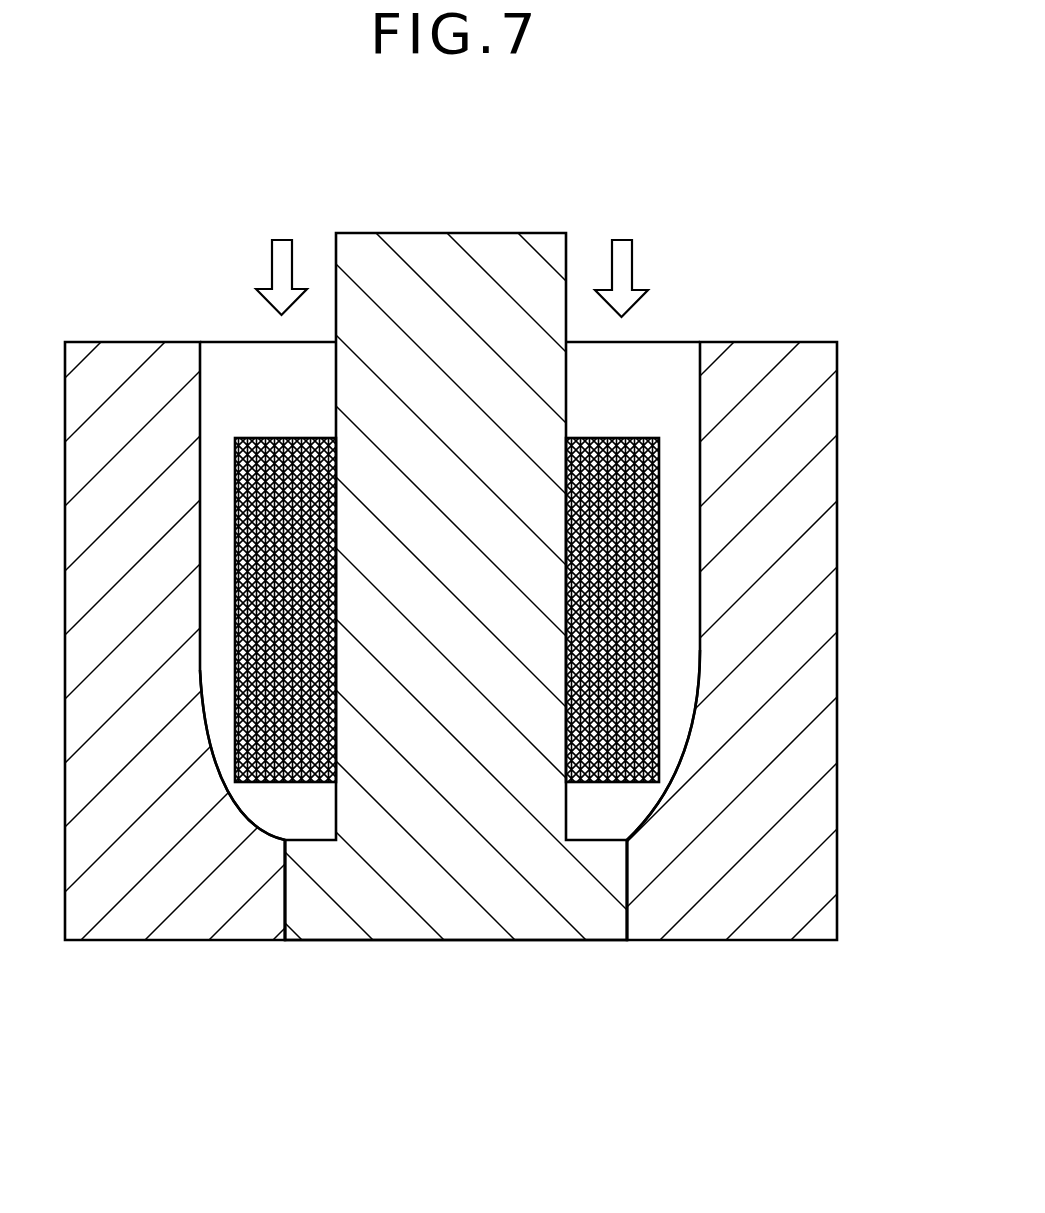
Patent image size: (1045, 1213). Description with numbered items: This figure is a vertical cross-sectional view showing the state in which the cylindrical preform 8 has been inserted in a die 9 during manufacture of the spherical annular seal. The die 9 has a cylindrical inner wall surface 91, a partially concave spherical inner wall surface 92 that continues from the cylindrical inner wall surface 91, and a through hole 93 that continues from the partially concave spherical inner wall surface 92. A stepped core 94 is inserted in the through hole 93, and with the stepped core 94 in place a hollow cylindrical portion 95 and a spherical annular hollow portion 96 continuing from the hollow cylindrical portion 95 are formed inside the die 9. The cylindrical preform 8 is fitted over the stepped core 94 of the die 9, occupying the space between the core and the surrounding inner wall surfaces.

The cylindrical preform 8 is at (259, 397).
The die 9 is at (522, 593).
The cylindrical inner wall surface 91 is at (700, 450).
The partially concave spherical inner wall surface 92 is at (700, 728).
The through hole 93 is at (625, 885).
The stepped core 94 is at (435, 885).
The hollow cylindrical portion 95 is at (682, 390).
The spherical annular hollow portion 96 is at (685, 677).